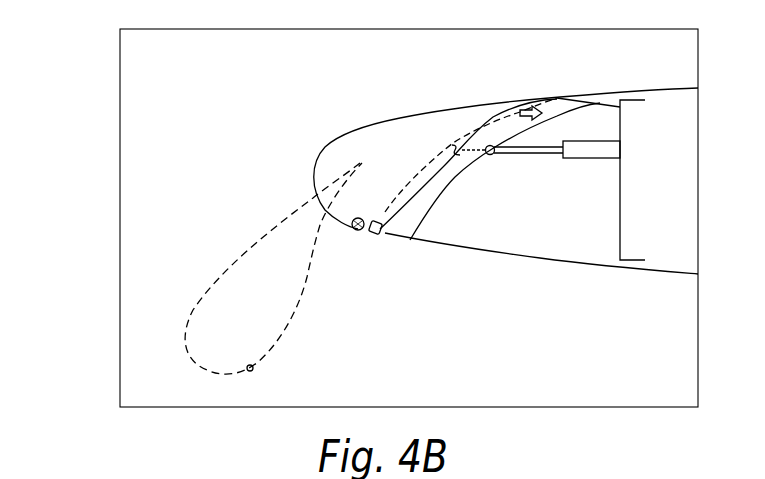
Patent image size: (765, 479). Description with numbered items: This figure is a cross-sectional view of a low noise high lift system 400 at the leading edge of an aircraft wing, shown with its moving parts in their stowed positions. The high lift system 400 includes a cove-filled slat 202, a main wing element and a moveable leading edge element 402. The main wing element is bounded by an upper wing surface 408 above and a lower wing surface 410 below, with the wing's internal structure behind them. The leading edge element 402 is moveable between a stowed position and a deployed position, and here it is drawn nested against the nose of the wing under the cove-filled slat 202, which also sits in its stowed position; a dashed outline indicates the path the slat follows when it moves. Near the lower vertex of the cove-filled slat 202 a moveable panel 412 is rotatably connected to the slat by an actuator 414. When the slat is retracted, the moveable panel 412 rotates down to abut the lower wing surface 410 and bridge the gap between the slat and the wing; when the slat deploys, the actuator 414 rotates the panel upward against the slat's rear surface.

The high lift system 400 is at (93, 42).
The cove-filled slat 202 is at (317, 162).
The leading edge element 402 is at (458, 166).
The upper wing surface 408 is at (637, 89).
The lower wing surface 410 is at (515, 257).
The moveable panel 412 is at (373, 235).
The actuator 414 is at (357, 218).